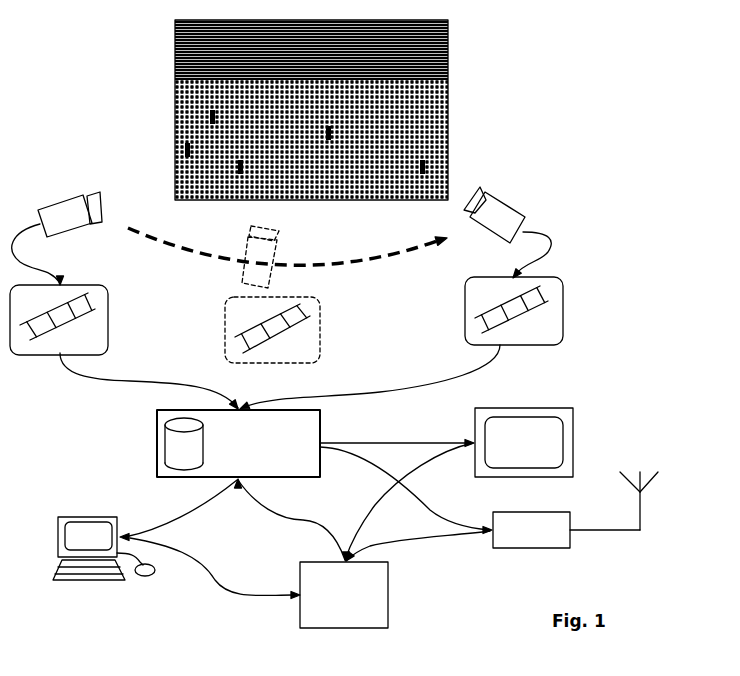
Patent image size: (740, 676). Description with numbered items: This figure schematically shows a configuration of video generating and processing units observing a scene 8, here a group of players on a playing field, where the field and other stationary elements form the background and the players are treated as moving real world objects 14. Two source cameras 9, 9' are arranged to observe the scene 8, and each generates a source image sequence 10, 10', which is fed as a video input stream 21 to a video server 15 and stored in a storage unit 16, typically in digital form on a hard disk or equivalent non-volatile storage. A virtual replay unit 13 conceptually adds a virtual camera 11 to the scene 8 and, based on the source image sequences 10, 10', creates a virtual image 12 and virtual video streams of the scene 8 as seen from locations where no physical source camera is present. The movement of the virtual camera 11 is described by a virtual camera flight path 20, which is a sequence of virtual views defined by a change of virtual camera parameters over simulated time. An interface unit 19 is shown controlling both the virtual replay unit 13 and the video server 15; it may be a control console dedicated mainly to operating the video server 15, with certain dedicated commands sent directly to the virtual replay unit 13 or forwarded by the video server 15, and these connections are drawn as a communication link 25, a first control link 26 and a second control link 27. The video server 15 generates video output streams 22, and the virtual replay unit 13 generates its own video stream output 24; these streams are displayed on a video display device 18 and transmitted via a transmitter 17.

The scene 8 is at (118, 58).
The source camera 9 is at (58, 204).
The source camera 9' is at (513, 212).
The source image sequence 10 is at (86, 320).
The source image sequence 10' is at (548, 311).
The virtual camera 11 is at (242, 278).
The virtual image 12 is at (322, 317).
The virtual replay unit 13 is at (373, 620).
The real world object 14 is at (340, 111).
The video server 15 is at (310, 473).
The storage unit 16 is at (165, 448).
The transmitter 17 is at (535, 552).
The video display device 18 is at (573, 412).
The interface unit 19 is at (70, 538).
The virtual camera flight path 20 is at (392, 250).
The video input stream 21 is at (403, 380).
The video output stream 22 is at (376, 442).
The video stream output from virtual replay unit 24 is at (370, 495).
The communication link 25 is at (303, 520).
The first control link 26 is at (178, 510).
The second control link 27 is at (215, 568).